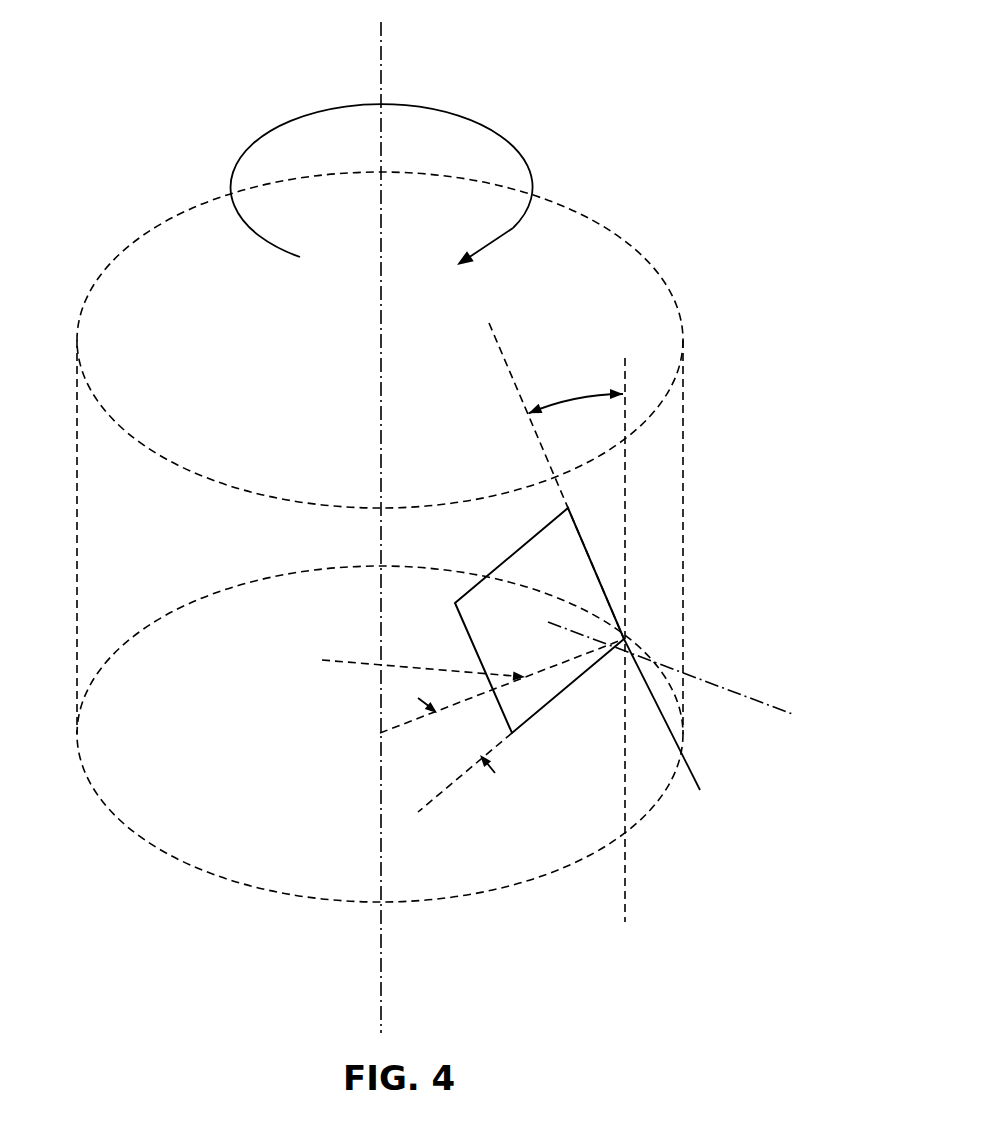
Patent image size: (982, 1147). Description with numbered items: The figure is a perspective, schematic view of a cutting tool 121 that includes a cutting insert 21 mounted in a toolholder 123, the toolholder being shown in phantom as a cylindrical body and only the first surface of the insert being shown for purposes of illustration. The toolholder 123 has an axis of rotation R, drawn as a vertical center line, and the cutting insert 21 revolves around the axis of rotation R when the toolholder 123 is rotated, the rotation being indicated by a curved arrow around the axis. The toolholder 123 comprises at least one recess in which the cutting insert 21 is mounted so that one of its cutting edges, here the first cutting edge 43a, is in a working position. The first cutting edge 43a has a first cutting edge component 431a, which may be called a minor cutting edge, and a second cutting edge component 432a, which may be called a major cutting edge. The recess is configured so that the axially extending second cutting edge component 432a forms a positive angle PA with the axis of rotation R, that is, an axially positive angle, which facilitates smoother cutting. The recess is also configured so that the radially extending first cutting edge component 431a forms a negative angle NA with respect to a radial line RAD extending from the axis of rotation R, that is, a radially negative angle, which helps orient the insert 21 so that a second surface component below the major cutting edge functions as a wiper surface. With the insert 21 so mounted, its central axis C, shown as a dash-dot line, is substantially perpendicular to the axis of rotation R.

The cutting tool 121 is at (706, 242).
The toolholder 123 is at (686, 372).
The cutting insert 21 is at (576, 579).
The second cutting edge component 432a is at (608, 602).
The first cutting edge 43a is at (624, 639).
The first cutting edge component 431a is at (697, 733).
The axis of rotation R is at (381, 78).
The positive angle PA is at (576, 382).
The negative angle NA is at (502, 706).
The radial line RAD is at (395, 665).
The central axis C is at (738, 695).